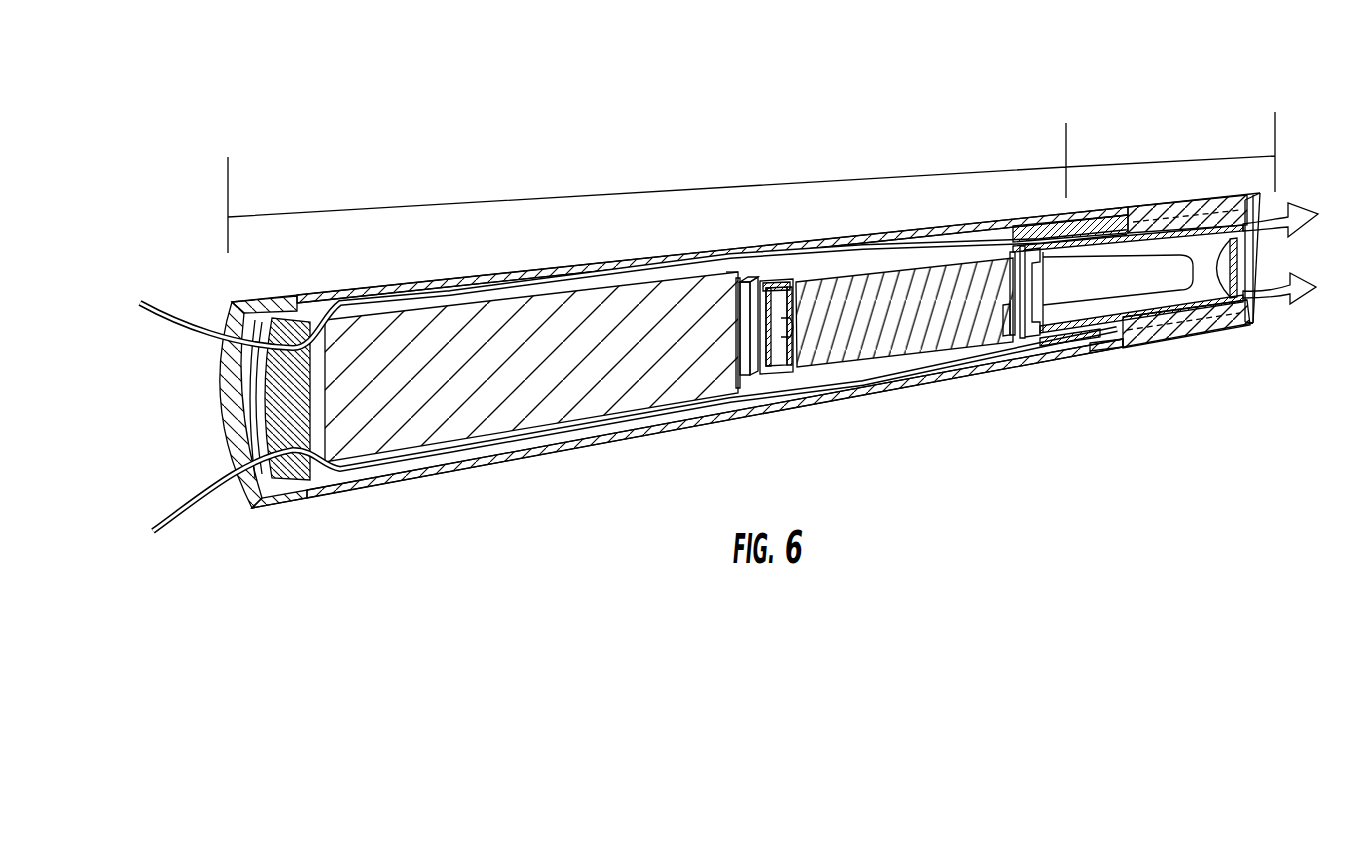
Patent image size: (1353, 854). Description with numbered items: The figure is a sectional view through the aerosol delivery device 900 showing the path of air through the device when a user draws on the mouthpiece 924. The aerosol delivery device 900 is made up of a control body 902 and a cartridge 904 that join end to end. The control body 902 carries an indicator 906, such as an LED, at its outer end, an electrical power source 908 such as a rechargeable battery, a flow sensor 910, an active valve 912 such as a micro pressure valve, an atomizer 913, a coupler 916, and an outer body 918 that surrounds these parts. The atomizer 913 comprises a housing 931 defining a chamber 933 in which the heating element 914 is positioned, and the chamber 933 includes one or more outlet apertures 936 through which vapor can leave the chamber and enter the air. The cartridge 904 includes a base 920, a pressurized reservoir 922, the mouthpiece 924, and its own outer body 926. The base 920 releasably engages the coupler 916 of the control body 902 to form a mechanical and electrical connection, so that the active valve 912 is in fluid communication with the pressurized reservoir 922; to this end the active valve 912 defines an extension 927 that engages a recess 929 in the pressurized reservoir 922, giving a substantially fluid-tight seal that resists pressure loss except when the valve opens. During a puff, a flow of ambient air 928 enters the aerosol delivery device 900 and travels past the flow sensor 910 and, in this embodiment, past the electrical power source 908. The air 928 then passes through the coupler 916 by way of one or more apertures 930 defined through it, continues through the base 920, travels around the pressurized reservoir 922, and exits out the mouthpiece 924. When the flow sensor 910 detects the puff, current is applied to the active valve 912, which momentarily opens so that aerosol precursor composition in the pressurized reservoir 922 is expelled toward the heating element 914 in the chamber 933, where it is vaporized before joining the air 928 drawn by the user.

The aerosol delivery device 900 is at (316, 78).
The control body 902 is at (622, 165).
The cartridge 904 is at (1163, 138).
The indicator 906 is at (228, 310).
The electrical power source 908 is at (573, 410).
The flow sensor 910 is at (287, 408).
The active valve 912 is at (878, 338).
The atomizer 913 is at (728, 266).
The heating element 914 is at (762, 380).
The coupler 916 is at (1070, 370).
The outer body 918 is at (407, 476).
The base 920 is at (1100, 360).
The pressurized reservoir 922 is at (1203, 295).
The mouthpiece 924 is at (1257, 248).
The outer body 926 is at (1180, 340).
The extension 927 is at (1013, 320).
The ambient air 928 is at (197, 494).
The recess 929 is at (1015, 230).
The apertures 930 is at (1023, 363).
The housing 931 is at (748, 338).
The chamber 933 is at (763, 287).
The outlet apertures 936 is at (773, 378).